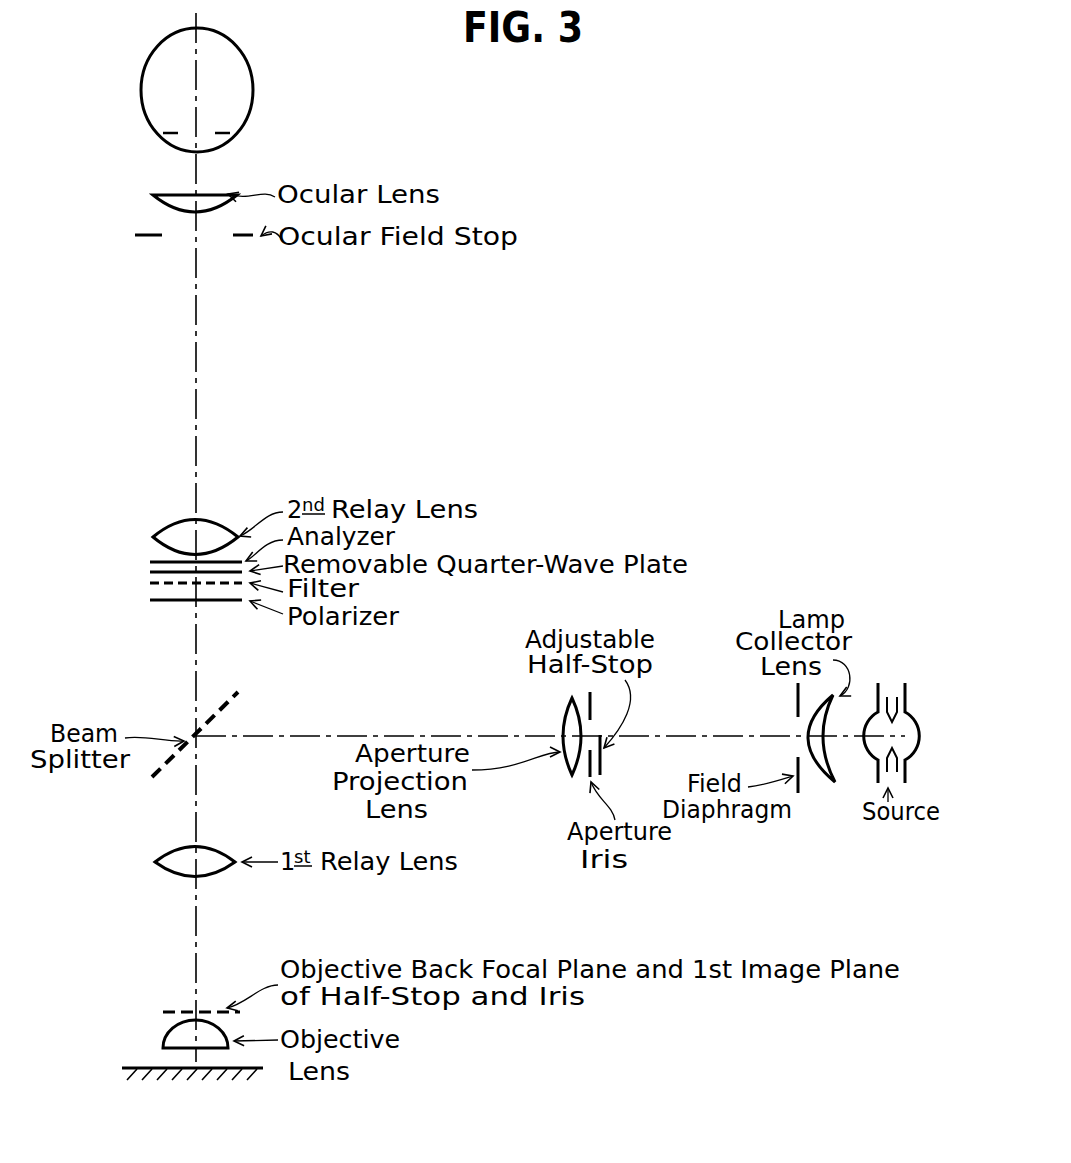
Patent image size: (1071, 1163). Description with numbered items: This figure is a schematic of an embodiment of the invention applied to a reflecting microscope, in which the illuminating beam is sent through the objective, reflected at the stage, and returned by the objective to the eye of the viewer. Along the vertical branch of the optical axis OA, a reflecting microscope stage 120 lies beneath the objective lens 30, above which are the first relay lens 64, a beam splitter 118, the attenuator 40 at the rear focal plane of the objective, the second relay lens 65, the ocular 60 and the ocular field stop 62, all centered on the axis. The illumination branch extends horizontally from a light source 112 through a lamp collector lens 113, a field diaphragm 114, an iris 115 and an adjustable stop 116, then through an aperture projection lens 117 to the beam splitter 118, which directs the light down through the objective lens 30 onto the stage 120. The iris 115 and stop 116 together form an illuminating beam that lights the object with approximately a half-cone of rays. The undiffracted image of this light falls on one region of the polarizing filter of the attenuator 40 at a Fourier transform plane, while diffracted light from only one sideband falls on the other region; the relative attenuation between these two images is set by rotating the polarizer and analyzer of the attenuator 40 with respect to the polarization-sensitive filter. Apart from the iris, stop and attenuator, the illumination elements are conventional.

The optical axis OA is at (200, 362).
The ocular 60 is at (168, 200).
The ocular field stop 62 is at (150, 238).
The second relay lens 65 is at (176, 526).
The attenuator 40 is at (137, 559).
The beam splitter 118 is at (190, 735).
The aperture projection lens 117 is at (563, 718).
The adjustable stop 116 is at (603, 762).
The iris 115 is at (583, 777).
The field diaphragm 114 is at (797, 765).
The lamp collector lens 113 is at (832, 780).
The light source 112 is at (914, 692).
The first relay lens 64 is at (166, 868).
The objective lens 30 is at (171, 1040).
The reflecting microscope stage 120 is at (131, 1071).